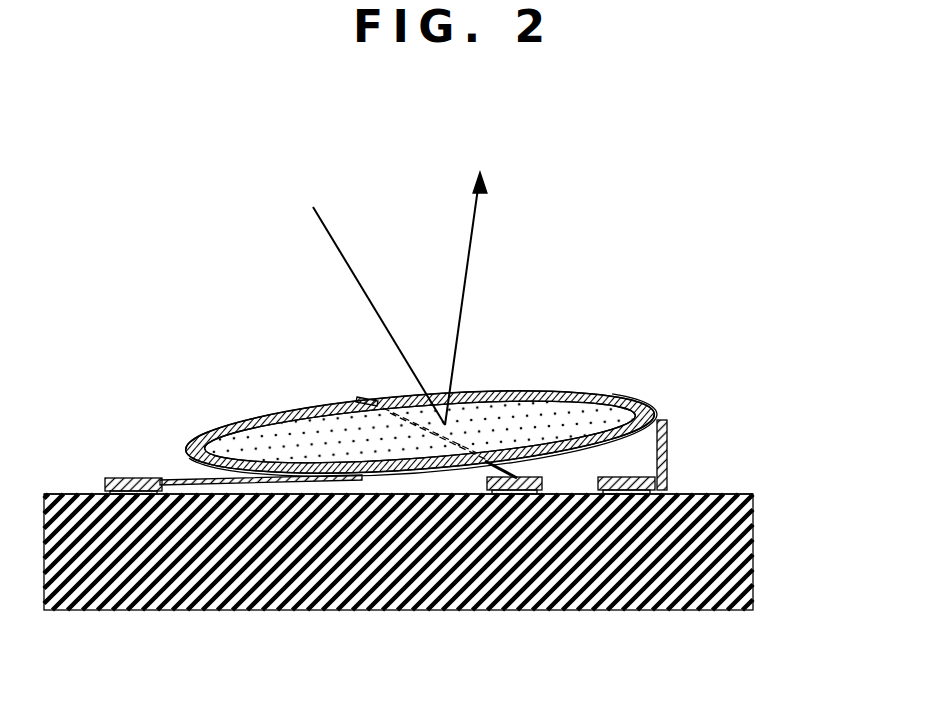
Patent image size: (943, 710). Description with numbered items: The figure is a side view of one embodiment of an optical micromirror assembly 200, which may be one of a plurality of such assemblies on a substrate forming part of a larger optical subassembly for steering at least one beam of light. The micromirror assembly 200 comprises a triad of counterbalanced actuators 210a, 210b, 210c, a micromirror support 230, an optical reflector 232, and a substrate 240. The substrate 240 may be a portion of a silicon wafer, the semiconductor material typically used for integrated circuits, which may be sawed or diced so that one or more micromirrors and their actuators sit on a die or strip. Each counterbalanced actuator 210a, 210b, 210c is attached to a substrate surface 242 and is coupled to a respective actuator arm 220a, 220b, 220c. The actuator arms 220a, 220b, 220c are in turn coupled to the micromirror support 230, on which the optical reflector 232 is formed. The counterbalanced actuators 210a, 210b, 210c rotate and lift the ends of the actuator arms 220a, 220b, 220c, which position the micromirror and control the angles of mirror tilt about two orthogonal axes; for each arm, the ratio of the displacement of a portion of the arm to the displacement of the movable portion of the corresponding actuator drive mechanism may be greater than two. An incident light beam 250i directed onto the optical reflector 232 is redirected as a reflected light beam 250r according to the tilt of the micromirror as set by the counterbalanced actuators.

The micromirror assembly 200 is at (154, 158).
The counterbalanced actuator 210a is at (640, 477).
The counterbalanced actuator 210b is at (541, 483).
The counterbalanced actuator 210c is at (108, 478).
The actuator arm 220a is at (667, 431).
The actuator arm 220b is at (417, 423).
The actuator arm 220c is at (183, 480).
The micromirror support 230 is at (522, 393).
The optical reflector 232 is at (620, 403).
The substrate 240 is at (755, 497).
The substrate surface 242 is at (712, 494).
The incident light beam 250i is at (331, 235).
The reflected light beam 250r is at (472, 247).